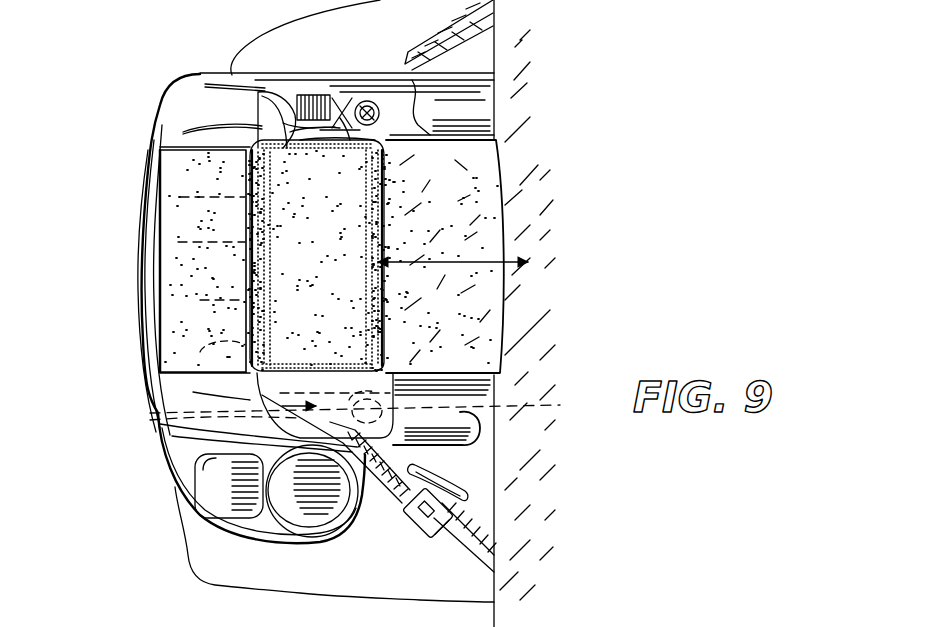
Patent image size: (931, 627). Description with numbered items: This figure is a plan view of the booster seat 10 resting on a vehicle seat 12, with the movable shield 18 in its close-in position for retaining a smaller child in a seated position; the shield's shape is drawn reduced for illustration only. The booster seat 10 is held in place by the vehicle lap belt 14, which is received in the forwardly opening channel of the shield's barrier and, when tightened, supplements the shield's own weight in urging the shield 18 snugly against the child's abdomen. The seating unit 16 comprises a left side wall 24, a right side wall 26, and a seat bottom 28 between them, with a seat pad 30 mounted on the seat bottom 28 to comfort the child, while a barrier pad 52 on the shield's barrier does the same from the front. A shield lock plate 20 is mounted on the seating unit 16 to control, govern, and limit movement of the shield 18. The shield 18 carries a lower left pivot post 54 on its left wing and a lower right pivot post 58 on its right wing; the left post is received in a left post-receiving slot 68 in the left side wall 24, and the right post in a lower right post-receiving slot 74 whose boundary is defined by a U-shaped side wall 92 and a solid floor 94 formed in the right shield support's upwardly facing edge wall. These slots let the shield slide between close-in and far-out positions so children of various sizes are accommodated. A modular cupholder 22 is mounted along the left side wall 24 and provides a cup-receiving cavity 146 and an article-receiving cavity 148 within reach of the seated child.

The booster seat 10 is at (128, 78).
The vehicle seat 12 is at (212, 555).
The vehicle lap belt 14 is at (428, 548).
The seating unit 16 is at (140, 232).
The movable shield 18 is at (250, 110).
The shield lock plate 20 is at (312, 100).
The cupholder 22 is at (160, 458).
The left side wall 24 is at (458, 452).
The right side wall 26 is at (458, 70).
The seat bottom 28 is at (135, 343).
The seat pad 30 is at (158, 284).
The barrier pad 52 is at (344, 287).
The lower left pivot post 54 is at (371, 407).
The lower right pivot post 58 is at (367, 100).
The left post-receiving slot 68 is at (160, 417).
The lower right post-receiving slot 74 is at (344, 103).
The U-shaped side wall 92 is at (343, 127).
The solid floor 94 is at (320, 115).
The cup-receiving cavity 146 is at (296, 495).
The article-receiving cavity 148 is at (222, 468).